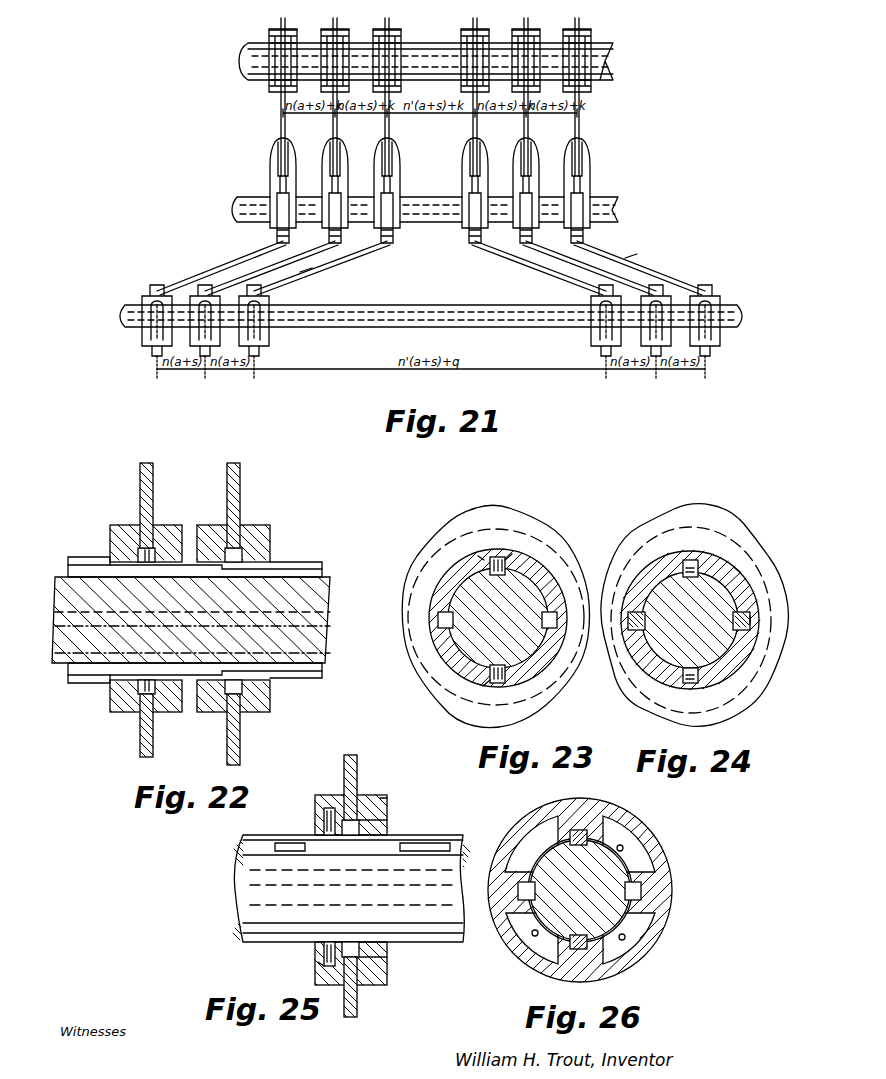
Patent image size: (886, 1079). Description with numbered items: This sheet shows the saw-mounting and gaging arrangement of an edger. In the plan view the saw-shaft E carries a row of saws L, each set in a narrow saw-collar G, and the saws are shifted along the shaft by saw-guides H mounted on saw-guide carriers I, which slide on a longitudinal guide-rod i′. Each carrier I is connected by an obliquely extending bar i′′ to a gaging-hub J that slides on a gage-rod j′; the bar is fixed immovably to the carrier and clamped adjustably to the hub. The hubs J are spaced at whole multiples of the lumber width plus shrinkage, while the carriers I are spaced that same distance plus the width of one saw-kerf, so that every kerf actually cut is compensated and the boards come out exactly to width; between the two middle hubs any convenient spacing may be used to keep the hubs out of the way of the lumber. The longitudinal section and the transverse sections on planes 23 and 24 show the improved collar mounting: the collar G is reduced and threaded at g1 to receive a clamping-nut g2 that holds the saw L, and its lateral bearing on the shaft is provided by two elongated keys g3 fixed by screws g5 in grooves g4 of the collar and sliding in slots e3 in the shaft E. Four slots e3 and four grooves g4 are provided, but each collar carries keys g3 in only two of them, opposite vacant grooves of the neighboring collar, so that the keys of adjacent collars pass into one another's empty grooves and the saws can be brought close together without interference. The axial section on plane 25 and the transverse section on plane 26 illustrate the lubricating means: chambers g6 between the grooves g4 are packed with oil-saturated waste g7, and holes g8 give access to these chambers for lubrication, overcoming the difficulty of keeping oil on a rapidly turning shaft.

In FIG. 21, the saw-shaft E is at (602, 44).
In FIG. 22, the saw-shaft E is at (327, 610).
In FIG. 23, the saw-shaft E is at (458, 645).
In FIG. 24, the saw-shaft E is at (665, 665).
In FIG. 25, the saw-shaft E is at (240, 887).
In FIG. 26, the saw-shaft E is at (618, 866).
In FIG. 21, the slots in the shaft e3 is at (252, 62).
In FIG. 22, the slots in the shaft e3 is at (322, 571).
In FIG. 23, the slots in the shaft e3 is at (500, 665).
In FIG. 24, the slots in the shaft e3 is at (731, 619).
In FIG. 25, the slots in the shaft e3 is at (246, 853).
In FIG. 26, the slots in the shaft e3 is at (546, 866).
In FIG. 21, the saw-collar G is at (276, 94).
In FIG. 22, the saw-collar G is at (122, 525).
In FIG. 23, the saw-collar G is at (484, 560).
In FIG. 24, the saw-collar G is at (737, 570).
In FIG. 25, the saw-collar G is at (316, 798).
In FIG. 26, the saw-collar G is at (628, 828).
In FIG. 22, the reduced threaded portion of collar g1 is at (178, 548).
In FIG. 25, the reduced threaded portion of collar g1 is at (380, 834).
In FIG. 22, the clamping-nut g2 is at (327, 612).
In FIG. 25, the clamping-nut g2 is at (387, 802).
In FIG. 21, the elongated keys g3 is at (352, 58).
In FIG. 22, the elongated keys g3 is at (80, 558).
In FIG. 23, the elongated keys g3 is at (506, 560).
In FIG. 24, the elongated keys g3 is at (722, 573).
In FIG. 25, the elongated keys g3 is at (412, 843).
In FIG. 26, the elongated keys g3 is at (570, 838).
In FIG. 22, the grooves in the collar g4 is at (300, 566).
In FIG. 23, the grooves in the collar g4 is at (438, 620).
In FIG. 24, the grooves in the collar g4 is at (695, 565).
In FIG. 26, the grooves in the collar g4 is at (641, 892).
In FIG. 22, the screws g5 is at (327, 653).
In FIG. 23, the screws g5 is at (500, 556).
In FIG. 24, the screws g5 is at (752, 620).
In FIG. 25, the lubricating chambers g6 is at (318, 962).
In FIG. 26, the lubricating chambers g6 is at (648, 860).
In FIG. 25, the oil-saturated waste g7 is at (324, 818).
In FIG. 25, the holes g8 is at (323, 950).
In FIG. 26, the holes g8 is at (619, 846).
In FIG. 21, the saws L is at (331, 16).
In FIG. 22, the saws L is at (153, 480).
In FIG. 23, the saws L is at (495, 616).
In FIG. 24, the saws L is at (614, 543).
In FIG. 25, the saws L is at (358, 780).
In FIG. 21, the saw-guides H is at (322, 157).
In FIG. 21, the saw-guide carriers I is at (336, 248).
In FIG. 21, the guide-rod i′ is at (610, 200).
In FIG. 21, the obliquely extending bar i′′ is at (290, 278).
In FIG. 21, the gaging-hubs J is at (141, 342).
In FIG. 21, the gage-rod j′ is at (431, 302).
In FIG. 22, the section plane 23 is at (152, 775).
In FIG. 22, the section plane 24 is at (228, 773).
In FIG. 23, the section plane 25 is at (602, 724).
In FIG. 22, the section plane 26 is at (124, 748).
In FIG. 25, the section plane 26 is at (330, 1035).